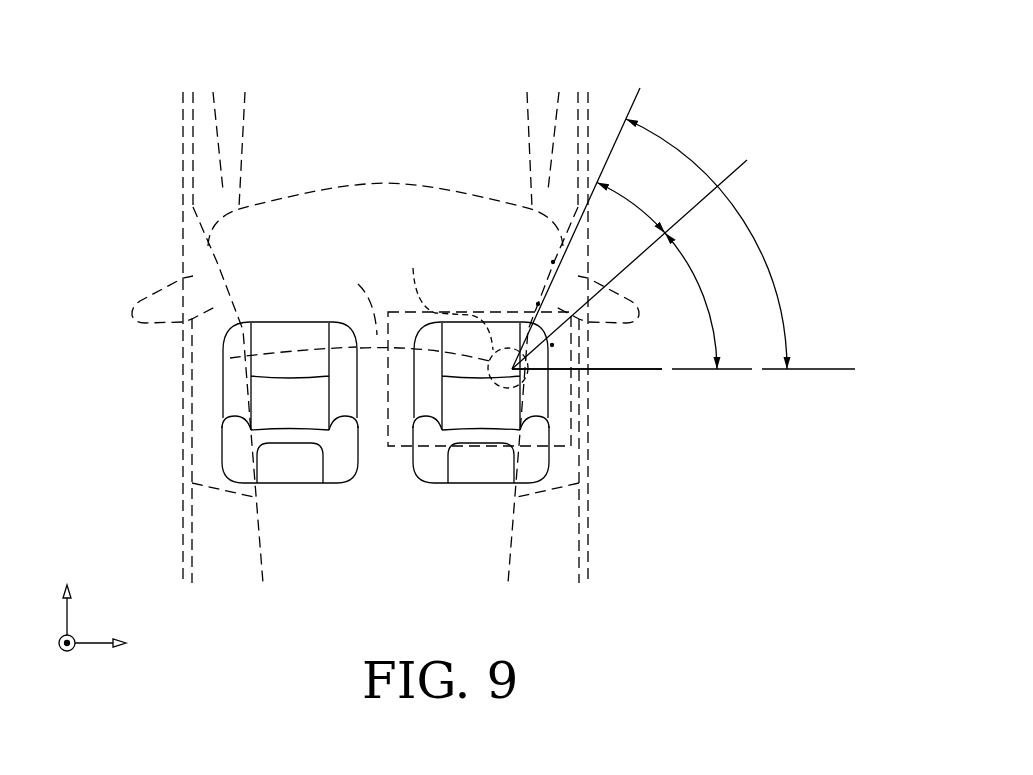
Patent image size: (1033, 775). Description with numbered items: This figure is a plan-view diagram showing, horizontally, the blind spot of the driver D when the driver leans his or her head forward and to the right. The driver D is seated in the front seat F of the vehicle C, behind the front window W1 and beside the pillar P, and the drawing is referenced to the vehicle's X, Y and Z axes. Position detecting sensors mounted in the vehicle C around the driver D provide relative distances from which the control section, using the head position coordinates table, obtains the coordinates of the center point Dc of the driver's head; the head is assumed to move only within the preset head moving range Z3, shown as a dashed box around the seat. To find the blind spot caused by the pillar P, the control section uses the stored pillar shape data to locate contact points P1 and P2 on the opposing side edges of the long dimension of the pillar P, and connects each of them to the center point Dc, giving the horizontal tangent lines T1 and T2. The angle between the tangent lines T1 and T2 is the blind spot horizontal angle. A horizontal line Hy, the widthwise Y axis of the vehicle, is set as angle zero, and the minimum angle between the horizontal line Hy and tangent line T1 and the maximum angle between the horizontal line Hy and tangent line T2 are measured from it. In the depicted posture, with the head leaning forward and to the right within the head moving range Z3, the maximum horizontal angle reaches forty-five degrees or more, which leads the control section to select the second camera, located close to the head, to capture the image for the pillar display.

The vehicle C is at (182, 157).
The front window W1 is at (350, 182).
The front seat F is at (415, 477).
The head moving range Z3 is at (362, 287).
The driver D is at (448, 293).
The center point of the head Dc is at (491, 384).
The pillar P is at (553, 262).
The contact point P1 is at (552, 345).
The contact point P2 is at (538, 304).
The horizontal line Hy is at (814, 372).
The tangent line T1 is at (747, 160).
The tangent line T2 is at (632, 97).
The X-axis X is at (68, 594).
The Y-axis Y is at (111, 643).
The Z-axis Z is at (58, 645).